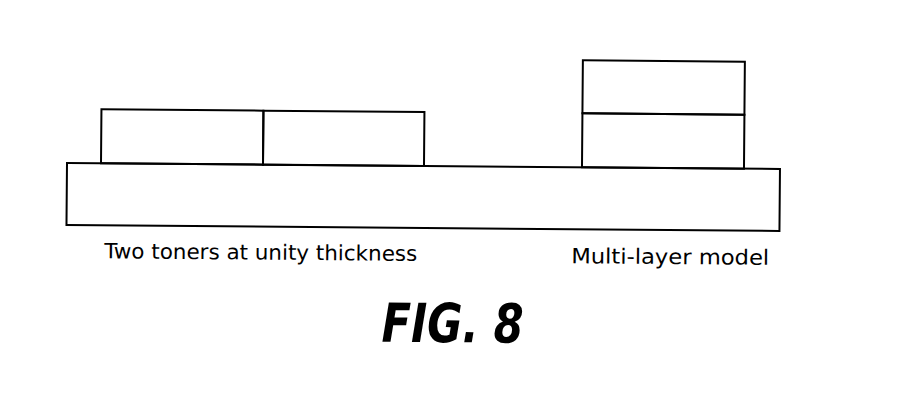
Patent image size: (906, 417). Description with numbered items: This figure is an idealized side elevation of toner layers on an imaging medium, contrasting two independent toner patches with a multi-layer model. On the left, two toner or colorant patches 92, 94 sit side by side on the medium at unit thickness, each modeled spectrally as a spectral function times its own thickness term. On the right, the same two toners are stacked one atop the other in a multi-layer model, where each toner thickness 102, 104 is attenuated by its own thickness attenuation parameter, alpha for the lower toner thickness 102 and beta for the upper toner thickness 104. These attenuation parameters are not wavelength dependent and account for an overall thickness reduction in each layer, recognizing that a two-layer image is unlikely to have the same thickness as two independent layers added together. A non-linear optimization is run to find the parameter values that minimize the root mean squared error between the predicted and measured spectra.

The toner patch 92 is at (143, 109).
The toner patch 94 is at (335, 108).
The toner thickness 102 is at (745, 137).
The toner thickness 104 is at (725, 56).